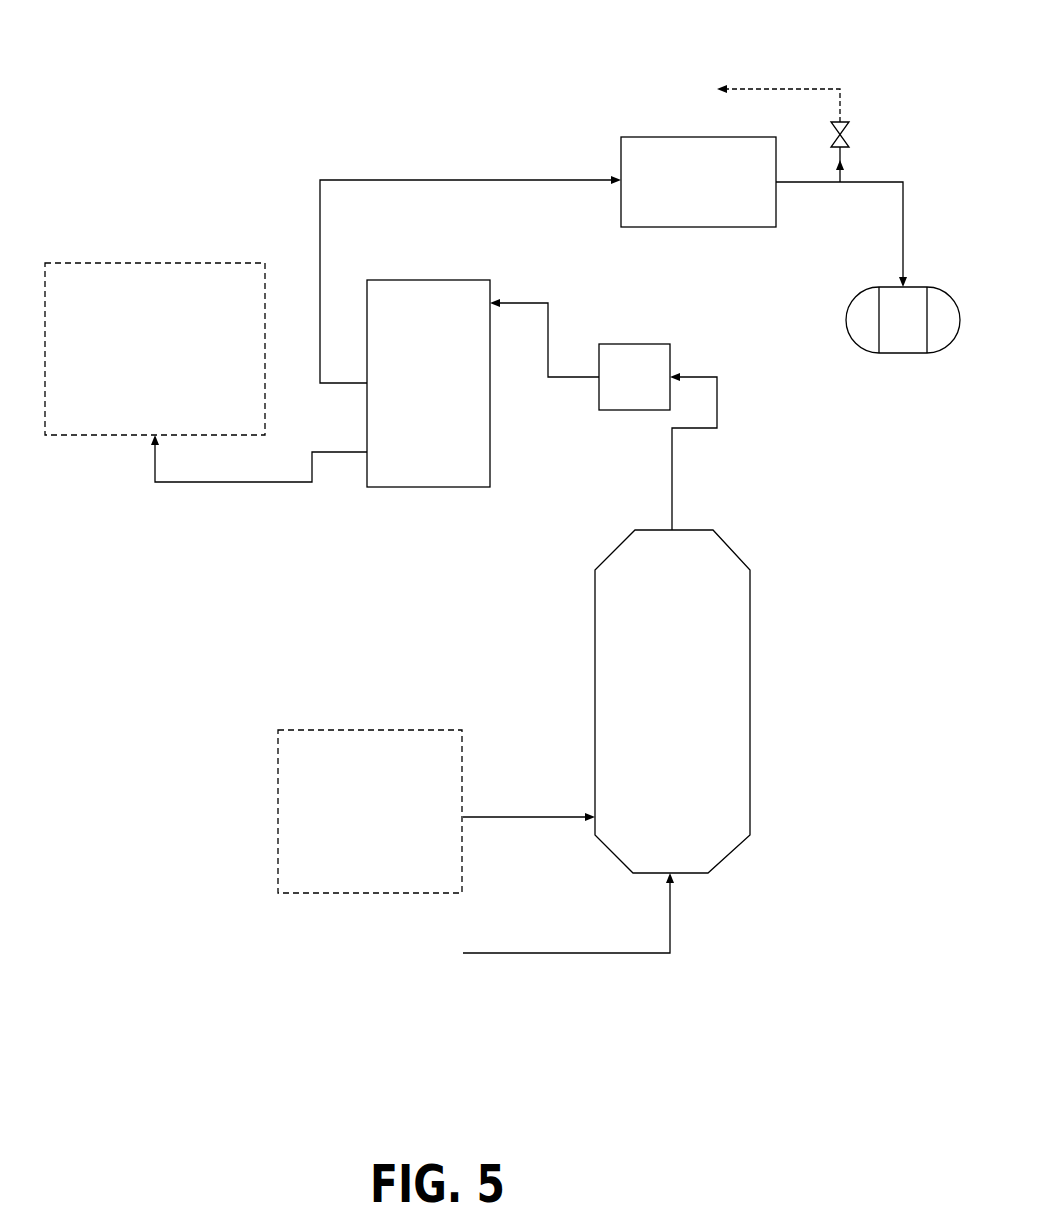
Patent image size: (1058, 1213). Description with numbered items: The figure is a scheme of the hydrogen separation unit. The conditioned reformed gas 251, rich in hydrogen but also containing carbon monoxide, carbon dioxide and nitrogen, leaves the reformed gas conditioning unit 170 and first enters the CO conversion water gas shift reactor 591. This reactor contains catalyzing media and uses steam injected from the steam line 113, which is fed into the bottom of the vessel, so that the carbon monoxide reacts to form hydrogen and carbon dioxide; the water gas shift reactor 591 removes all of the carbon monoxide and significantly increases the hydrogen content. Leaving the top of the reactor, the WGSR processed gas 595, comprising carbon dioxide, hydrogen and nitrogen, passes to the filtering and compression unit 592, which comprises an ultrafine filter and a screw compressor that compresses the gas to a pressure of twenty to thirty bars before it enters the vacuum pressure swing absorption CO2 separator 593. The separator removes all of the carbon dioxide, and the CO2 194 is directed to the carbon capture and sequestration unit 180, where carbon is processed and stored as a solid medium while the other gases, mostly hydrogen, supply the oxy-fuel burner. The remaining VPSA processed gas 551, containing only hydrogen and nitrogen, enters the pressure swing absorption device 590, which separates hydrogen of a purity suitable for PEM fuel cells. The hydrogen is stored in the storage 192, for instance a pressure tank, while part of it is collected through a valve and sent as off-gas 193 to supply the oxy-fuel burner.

The steam line 113 is at (672, 925).
The reformed gas conditioning unit 170 is at (370, 811).
The carbon capture and sequestration unit 180 is at (155, 349).
The storage 192 is at (901, 355).
The off-gas 193 is at (780, 93).
The CO2 194 is at (243, 483).
The conditioned reformed gas 251 is at (531, 818).
The VPSA processed gas 551 is at (443, 178).
The pressure swing absorption device 590 is at (698, 182).
The water gas shift reactor 591 is at (752, 700).
The filtering and compression unit 592 is at (633, 344).
The vacuum pressure swing absorption CO2 separator 593 is at (428, 383).
The WGSR processed gas 595 is at (668, 467).